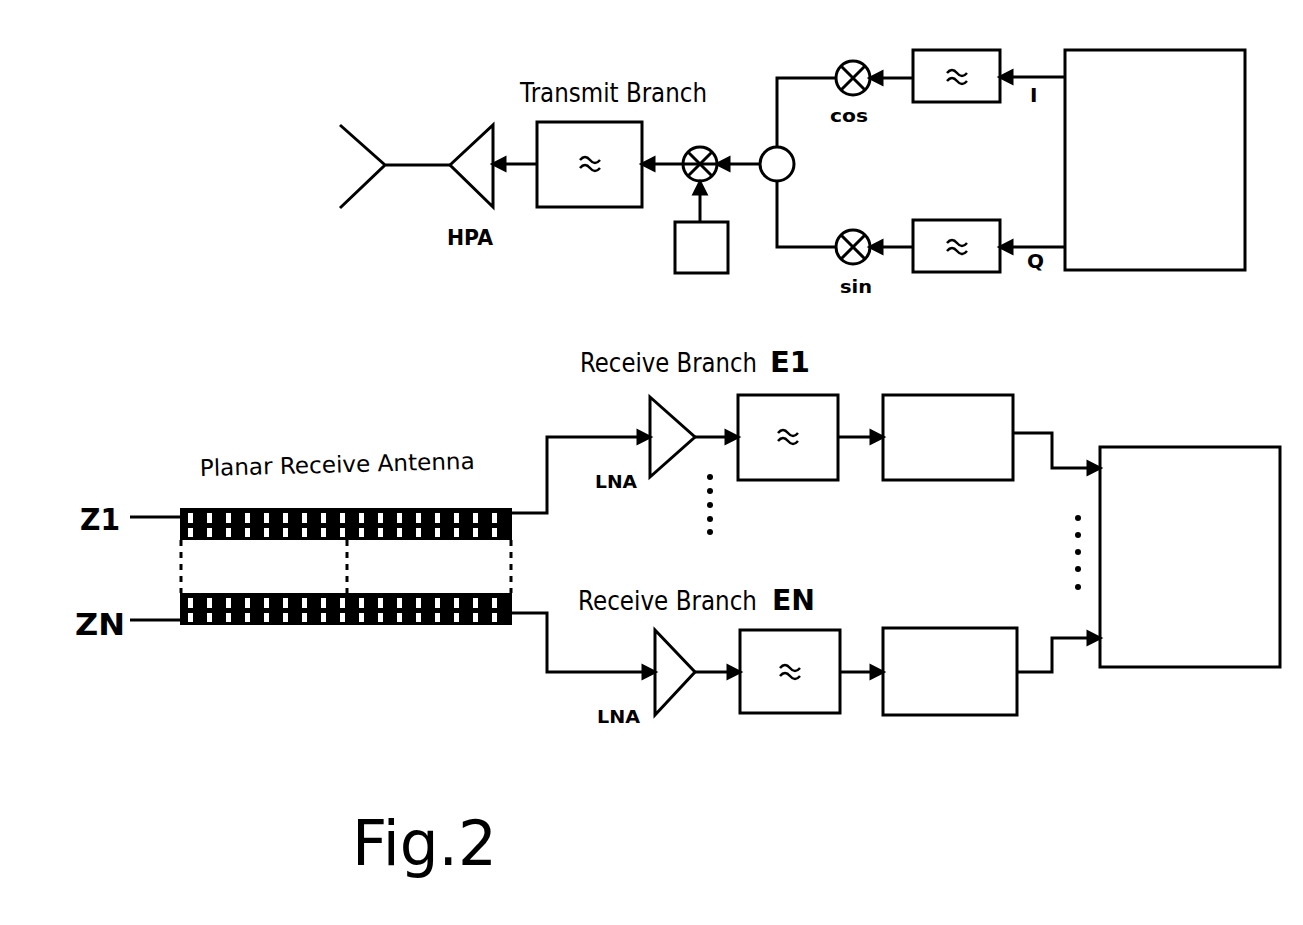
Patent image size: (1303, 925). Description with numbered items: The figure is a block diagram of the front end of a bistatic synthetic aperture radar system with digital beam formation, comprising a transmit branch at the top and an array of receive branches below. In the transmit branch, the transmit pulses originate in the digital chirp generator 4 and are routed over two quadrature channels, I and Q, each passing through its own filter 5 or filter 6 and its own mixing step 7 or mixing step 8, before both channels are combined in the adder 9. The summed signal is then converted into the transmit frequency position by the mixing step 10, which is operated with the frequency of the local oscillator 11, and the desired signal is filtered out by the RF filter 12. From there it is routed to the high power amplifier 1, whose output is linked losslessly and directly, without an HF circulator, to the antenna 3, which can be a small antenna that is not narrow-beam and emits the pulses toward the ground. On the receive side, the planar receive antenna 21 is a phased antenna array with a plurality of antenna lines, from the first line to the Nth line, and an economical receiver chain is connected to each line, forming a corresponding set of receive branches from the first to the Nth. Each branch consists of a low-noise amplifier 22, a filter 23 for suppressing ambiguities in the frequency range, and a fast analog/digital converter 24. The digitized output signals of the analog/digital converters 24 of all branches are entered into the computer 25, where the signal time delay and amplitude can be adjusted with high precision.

The high power amplifier 1 is at (471, 143).
The antenna 3 is at (395, 144).
The digital chirp generator 4 is at (1155, 139).
The filter 5 is at (956, 54).
The filter 6 is at (956, 226).
The mixing step 7 is at (853, 55).
The mixing step 8 is at (853, 225).
The adder 9 is at (790, 165).
The mixing step 10 is at (714, 149).
The local oscillator 11 is at (701, 266).
The RF filter 12 is at (589, 185).
The planar receive antenna 21 is at (346, 596).
The low-noise amplifier 22 is at (681, 566).
The filter 23 is at (789, 574).
The analog/digital converter 24 is at (950, 573).
The computer 25 is at (1190, 536).